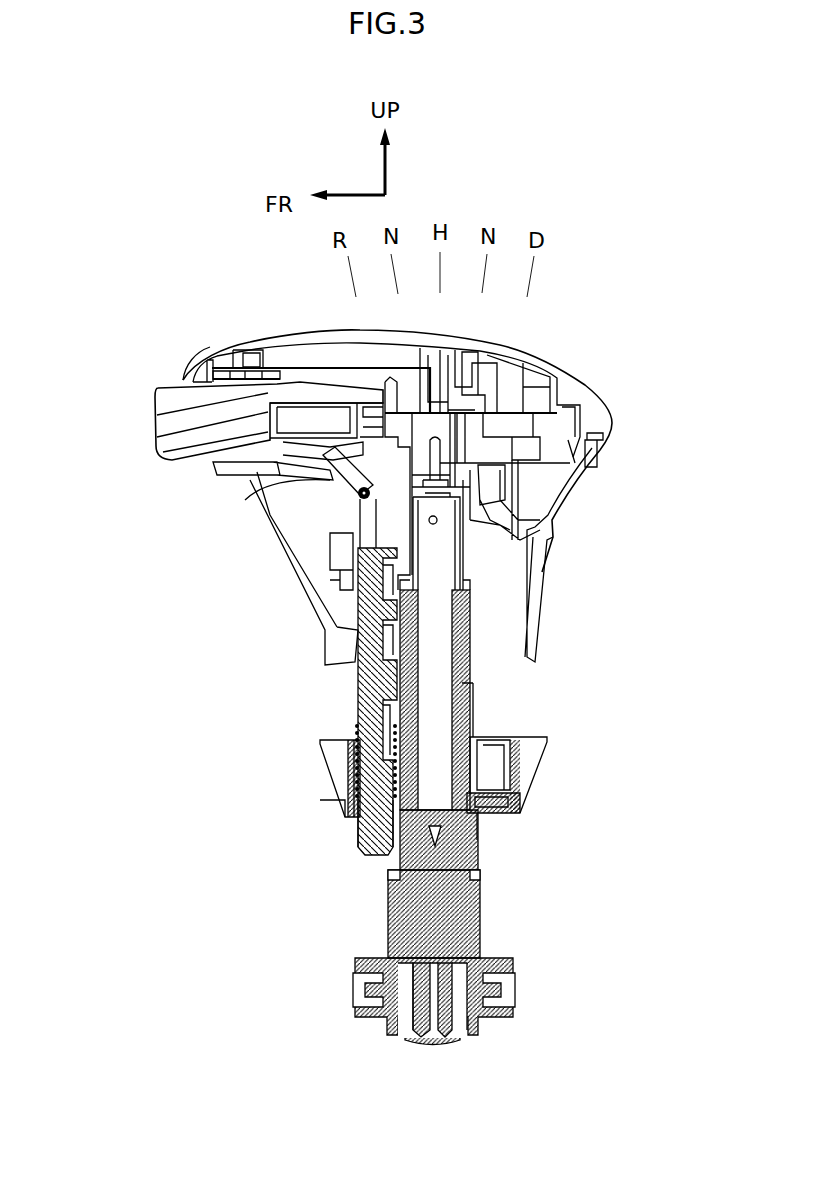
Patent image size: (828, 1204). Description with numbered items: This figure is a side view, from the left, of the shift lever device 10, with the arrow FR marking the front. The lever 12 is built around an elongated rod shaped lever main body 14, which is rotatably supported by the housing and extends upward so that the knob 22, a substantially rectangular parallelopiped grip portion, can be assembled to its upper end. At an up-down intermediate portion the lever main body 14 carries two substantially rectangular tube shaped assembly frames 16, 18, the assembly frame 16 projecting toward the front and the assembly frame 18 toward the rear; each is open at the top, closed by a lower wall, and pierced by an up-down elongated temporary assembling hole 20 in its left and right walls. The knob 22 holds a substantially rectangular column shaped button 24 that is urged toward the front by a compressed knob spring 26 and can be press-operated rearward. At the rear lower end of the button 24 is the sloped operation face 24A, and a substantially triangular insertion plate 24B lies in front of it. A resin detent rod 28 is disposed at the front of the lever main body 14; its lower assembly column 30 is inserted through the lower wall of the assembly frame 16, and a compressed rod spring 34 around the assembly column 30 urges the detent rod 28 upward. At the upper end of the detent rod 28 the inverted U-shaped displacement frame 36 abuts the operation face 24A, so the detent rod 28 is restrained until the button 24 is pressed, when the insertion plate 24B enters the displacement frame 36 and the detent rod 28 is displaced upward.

The shift lever device 10 is at (112, 245).
The lever 12 is at (600, 385).
The lever main body 14 is at (386, 915).
The assembly frame 16 is at (356, 741).
The assembly frame 18 is at (522, 736).
The temporary assembling hole 20 is at (492, 752).
The knob 22 is at (232, 345).
The button 24 is at (156, 388).
The operation face 24A is at (338, 488).
The insertion plate 24B is at (345, 515).
The knob spring 26 is at (304, 405).
The detent rod 28 is at (357, 692).
The assembly column 30 is at (358, 845).
The rod spring 34 is at (346, 768).
The displacement frame 36 is at (352, 525).